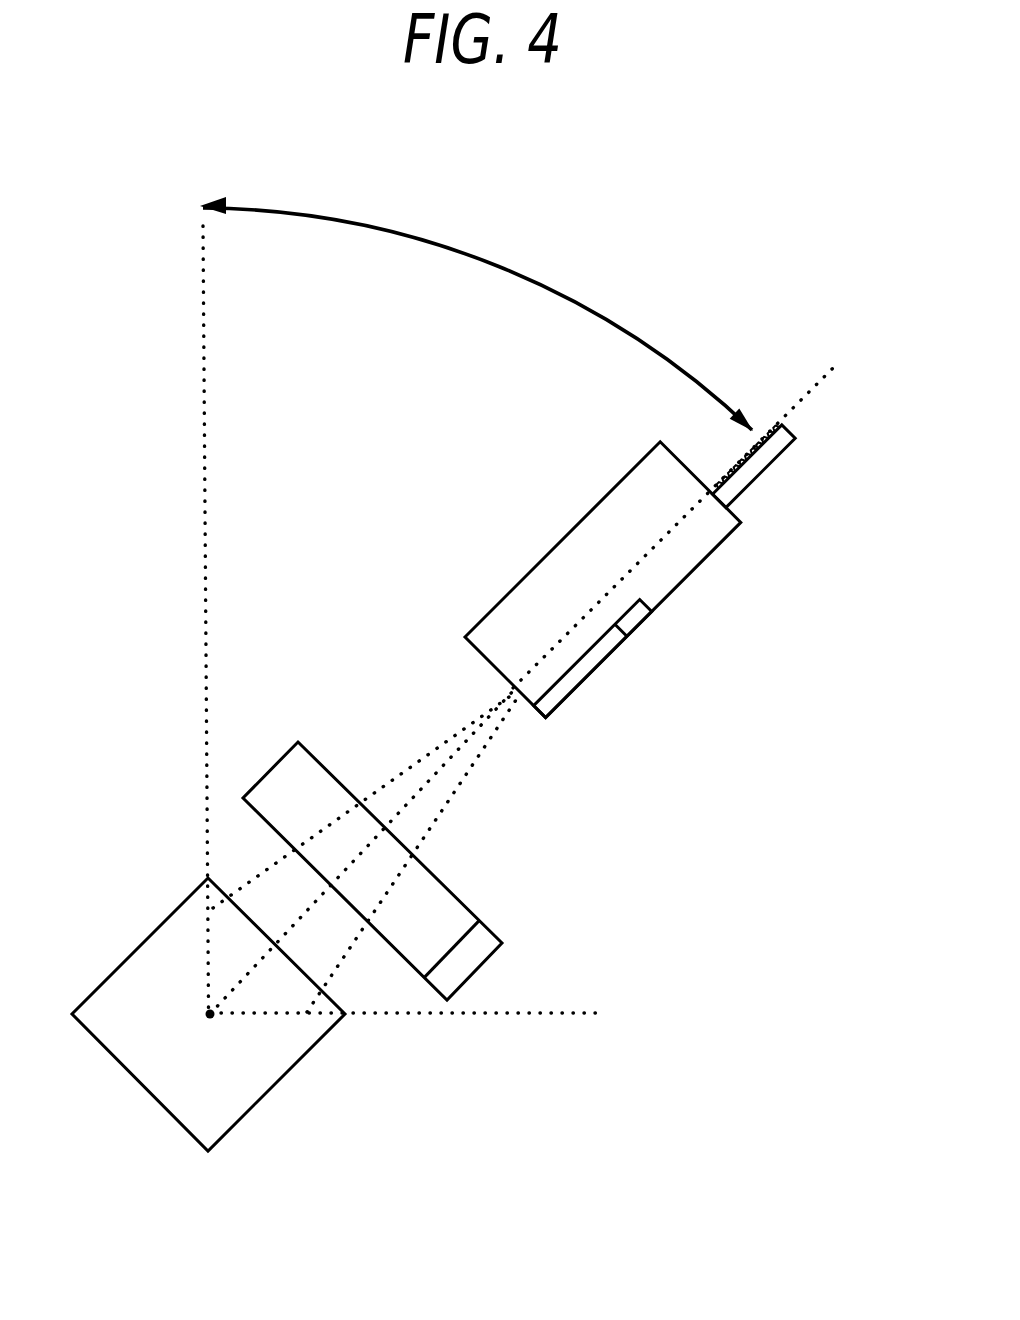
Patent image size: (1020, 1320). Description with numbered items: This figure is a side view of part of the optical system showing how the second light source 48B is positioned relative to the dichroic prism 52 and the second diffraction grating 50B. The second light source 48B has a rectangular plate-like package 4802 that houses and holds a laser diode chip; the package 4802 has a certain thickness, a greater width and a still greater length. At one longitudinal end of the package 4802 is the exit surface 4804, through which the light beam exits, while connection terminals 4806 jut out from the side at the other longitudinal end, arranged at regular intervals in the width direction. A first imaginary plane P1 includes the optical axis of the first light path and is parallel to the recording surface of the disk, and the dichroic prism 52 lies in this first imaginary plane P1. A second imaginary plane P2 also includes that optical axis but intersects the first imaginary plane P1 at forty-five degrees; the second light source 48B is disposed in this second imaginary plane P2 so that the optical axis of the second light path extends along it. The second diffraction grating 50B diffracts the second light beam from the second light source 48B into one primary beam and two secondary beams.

The second light source 48B is at (653, 542).
The package 4802 is at (602, 495).
The exit surface 4804 is at (481, 657).
The connection terminals 4806 is at (773, 463).
The second diffraction grating 50B is at (470, 982).
The dichroic prism 52 is at (285, 1078).
The first imaginary plane P1 is at (582, 1008).
The second imaginary plane P2 is at (433, 780).